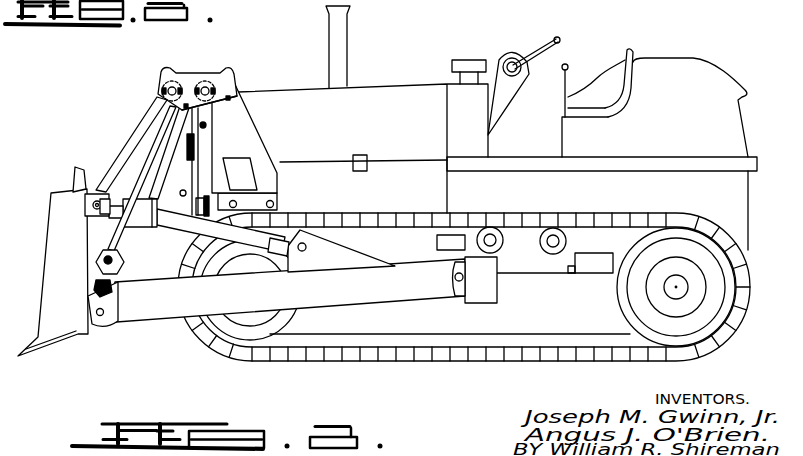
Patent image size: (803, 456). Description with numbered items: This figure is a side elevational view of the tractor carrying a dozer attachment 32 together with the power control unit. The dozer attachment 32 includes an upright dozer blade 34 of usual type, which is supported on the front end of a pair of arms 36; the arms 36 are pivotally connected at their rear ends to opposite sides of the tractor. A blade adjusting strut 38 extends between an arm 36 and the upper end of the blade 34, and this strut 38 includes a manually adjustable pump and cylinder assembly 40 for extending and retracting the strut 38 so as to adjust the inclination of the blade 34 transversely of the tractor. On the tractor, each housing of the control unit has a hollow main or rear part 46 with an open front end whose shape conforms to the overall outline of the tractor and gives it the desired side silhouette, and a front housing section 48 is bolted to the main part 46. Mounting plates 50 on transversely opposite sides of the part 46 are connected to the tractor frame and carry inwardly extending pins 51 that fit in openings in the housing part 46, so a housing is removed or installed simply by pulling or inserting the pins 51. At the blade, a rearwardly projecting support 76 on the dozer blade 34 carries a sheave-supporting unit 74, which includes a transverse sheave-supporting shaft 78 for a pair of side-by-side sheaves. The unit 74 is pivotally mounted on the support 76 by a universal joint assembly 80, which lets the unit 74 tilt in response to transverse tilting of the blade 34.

The dozer attachment 32 is at (91, 160).
The dozer blade 34 is at (57, 228).
The arms 36 is at (158, 308).
The blade adjusting strut 38 is at (187, 193).
The pump and cylinder assembly 40 is at (133, 164).
The main or rear part 46 is at (250, 135).
The front housing section 48 is at (205, 140).
The mounting plates 50 is at (257, 200).
The pins 51 is at (273, 204).
The sheave-supporting unit 74 is at (121, 259).
The rearwardly projecting support 76 is at (97, 312).
The sheave-supporting shaft 78 is at (114, 262).
The universal joint assembly 80 is at (119, 283).